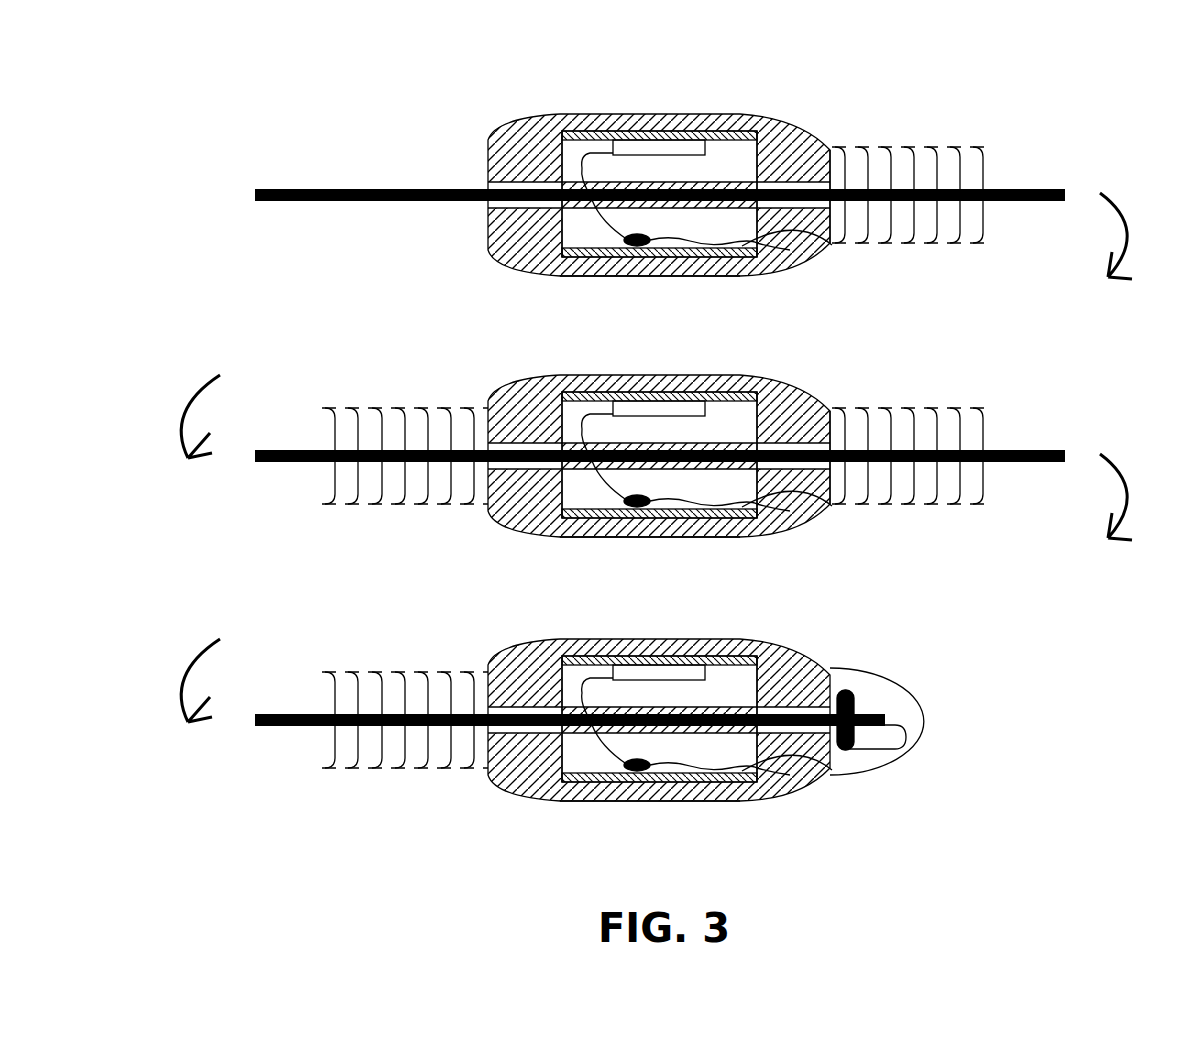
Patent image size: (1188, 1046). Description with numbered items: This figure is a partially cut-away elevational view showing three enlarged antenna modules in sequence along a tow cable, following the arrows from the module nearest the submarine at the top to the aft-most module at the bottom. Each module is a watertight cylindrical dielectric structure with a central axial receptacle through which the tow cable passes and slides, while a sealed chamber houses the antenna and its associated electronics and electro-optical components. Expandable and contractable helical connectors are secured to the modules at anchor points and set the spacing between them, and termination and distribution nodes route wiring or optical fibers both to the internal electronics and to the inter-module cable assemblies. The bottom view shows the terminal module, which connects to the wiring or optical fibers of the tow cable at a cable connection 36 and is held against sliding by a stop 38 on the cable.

The cable connection 36 is at (923, 721).
The stop 38 is at (902, 685).